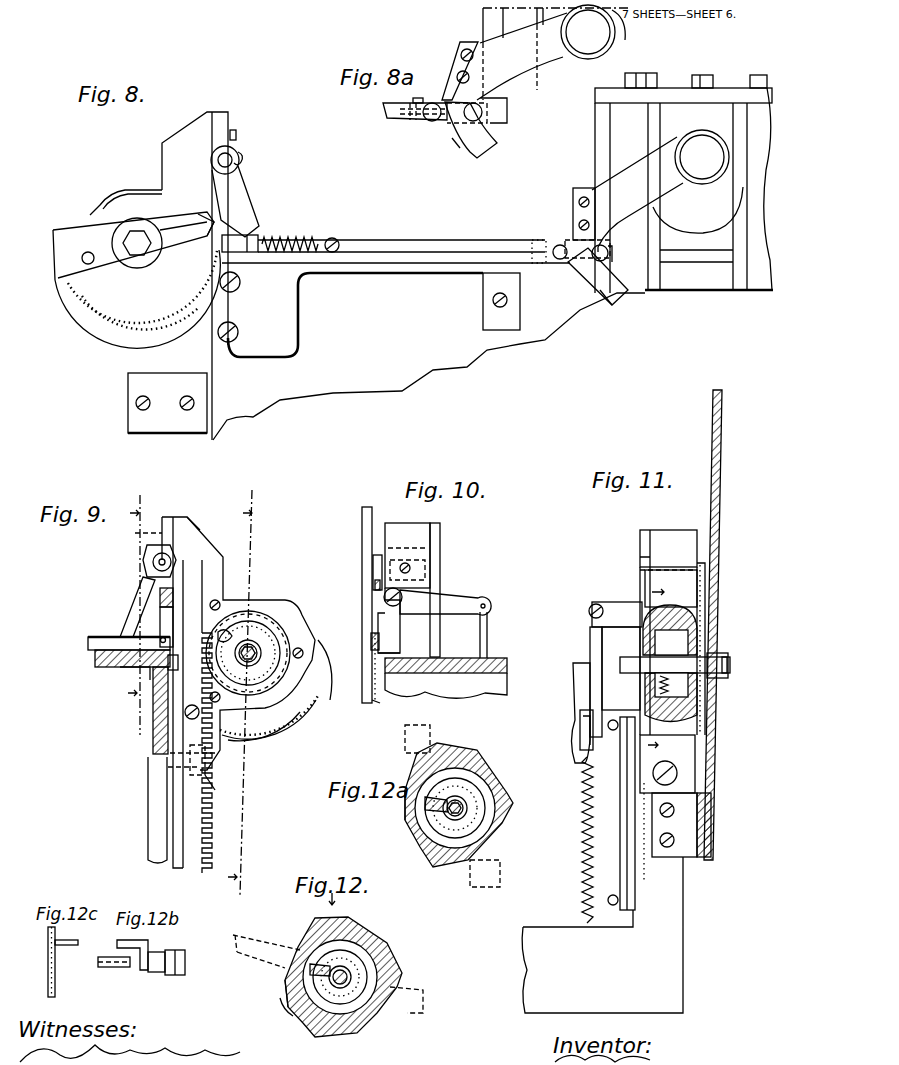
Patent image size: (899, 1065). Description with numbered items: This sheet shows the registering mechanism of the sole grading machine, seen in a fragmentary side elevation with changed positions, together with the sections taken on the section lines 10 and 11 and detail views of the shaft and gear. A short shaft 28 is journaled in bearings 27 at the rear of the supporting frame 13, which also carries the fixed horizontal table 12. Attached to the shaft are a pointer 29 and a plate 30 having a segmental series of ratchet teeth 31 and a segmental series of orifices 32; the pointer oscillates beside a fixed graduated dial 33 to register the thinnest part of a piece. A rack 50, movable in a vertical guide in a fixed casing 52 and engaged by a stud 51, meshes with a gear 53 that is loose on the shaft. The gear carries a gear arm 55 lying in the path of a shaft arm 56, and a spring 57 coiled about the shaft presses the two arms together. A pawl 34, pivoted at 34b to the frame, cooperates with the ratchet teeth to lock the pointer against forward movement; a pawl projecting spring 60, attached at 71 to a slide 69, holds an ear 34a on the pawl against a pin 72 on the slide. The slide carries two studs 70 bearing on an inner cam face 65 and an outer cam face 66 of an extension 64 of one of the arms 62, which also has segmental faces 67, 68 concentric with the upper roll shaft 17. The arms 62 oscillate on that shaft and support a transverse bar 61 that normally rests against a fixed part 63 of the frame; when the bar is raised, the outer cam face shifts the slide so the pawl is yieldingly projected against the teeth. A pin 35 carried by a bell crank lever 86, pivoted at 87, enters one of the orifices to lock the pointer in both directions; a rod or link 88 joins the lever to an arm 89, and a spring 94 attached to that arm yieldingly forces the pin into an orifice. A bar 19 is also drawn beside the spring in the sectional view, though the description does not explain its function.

In FIG. 9, the section line 10 is at (146, 609).
In FIG. 9, the section line 11 is at (247, 691).
In FIG. 11, the fixed horizontal table 12 is at (671, 662).
In FIG. 8, the supporting frame 13 is at (429, 356).
In FIG. 8, the shaft of upper roll 17 is at (702, 157).
In FIG. 8A, the shaft of upper roll 17 is at (588, 32).
In FIG. 11, the slide bar 19 is at (622, 806).
In FIG. 11, the bearings 27 is at (640, 662).
In FIG. 8, the short shaft 28 is at (140, 268).
In FIG. 9, the short shaft 28 is at (262, 614).
In FIG. 11, the short shaft 28 is at (621, 668).
In FIG. 12A, the short shaft 28 is at (463, 812).
In FIG. 12, the short shaft 28 is at (347, 1035).
In FIG. 12B, the short shaft 28 is at (116, 968).
In FIG. 8, the pointer 29 is at (186, 242).
In FIG. 11, the pointer 29 is at (727, 660).
In FIG. 12A, the pointer 29 is at (432, 730).
In FIG. 12, the pointer 29 is at (315, 963).
In FIG. 8, the plate 30 is at (136, 283).
In FIG. 9, the plate 30 is at (220, 783).
In FIG. 8, the ratchet teeth 31 is at (185, 373).
In FIG. 9, the ratchet teeth 31 is at (258, 746).
In FIG. 8, the orifices 32 is at (120, 327).
In FIG. 9, the orifices 32 is at (280, 722).
In FIG. 10, the orifices 32 is at (370, 640).
In FIG. 9, the graduated dial 33 is at (327, 684).
In FIG. 10, the graduated dial 33 is at (362, 530).
In FIG. 11, the graduated dial 33 is at (722, 520).
In FIG. 8, the pawl 34 is at (245, 212).
In FIG. 9, the pawl 34 is at (145, 572).
In FIG. 10, the pawl 34 is at (373, 572).
In FIG. 8, the ear 34a is at (250, 253).
In FIG. 9, the ear 34a is at (122, 634).
In FIG. 8, the pawl pivot 34b is at (265, 160).
In FIG. 9, the pawl pivot 34b is at (192, 522).
In FIG. 8, the pin 35 is at (205, 224).
In FIG. 9, the pin 35 is at (150, 668).
In FIG. 10, the pin 35 is at (392, 650).
In FIG. 9, the rack 50 is at (180, 707).
In FIG. 11, the rack 50 is at (712, 750).
In FIG. 9, the stud 51 is at (185, 714).
In FIG. 10, the stud 51 is at (376, 705).
In FIG. 8, the fixed casing 52 is at (160, 150).
In FIG. 9, the fixed casing 52 is at (240, 588).
In FIG. 10, the fixed casing 52 is at (420, 536).
In FIG. 11, the fixed casing 52 is at (680, 560).
In FIG. 11, the gear 53 is at (589, 612).
In FIG. 12C, the gear 53 is at (56, 980).
In FIG. 9, the gear arm 55 is at (184, 664).
In FIG. 12A, the gear arm 55 is at (405, 810).
In FIG. 12, the gear arm 55 is at (288, 995).
In FIG. 12C, the gear arm 55 is at (66, 946).
In FIG. 9, the shaft arm 56 is at (242, 630).
In FIG. 11, the shaft arm 56 is at (698, 630).
In FIG. 12A, the shaft arm 56 is at (425, 800).
In FIG. 12, the shaft arm 56 is at (308, 965).
In FIG. 12B, the shaft arm 56 is at (150, 942).
In FIG. 11, the spring 57 is at (671, 697).
In FIG. 12A, the spring 57 is at (470, 790).
In FIG. 12, the spring 57 is at (372, 952).
In FIG. 8, the pawl projecting spring 60 is at (300, 238).
In FIG. 8, the transverse bar 61 is at (573, 190).
In FIG. 8A, the transverse bar 61 is at (458, 43).
In FIG. 8, the arms 62 is at (667, 194).
In FIG. 8A, the arms 62 is at (551, 66).
In FIG. 8, the fixed part of frame 63 is at (597, 138).
In FIG. 8A, the fixed part of frame 63 is at (488, 32).
In FIG. 8, the extension 64 is at (592, 288).
In FIG. 8A, the extension 64 is at (465, 148).
In FIG. 8, the inner cam face 65 is at (579, 222).
In FIG. 8A, the inner cam face 65 is at (500, 118).
In FIG. 8, the outer cam face 66 is at (532, 244).
In FIG. 8, the segmental face 67 is at (610, 268).
In FIG. 8A, the segmental face 67 is at (495, 142).
In FIG. 8, the segmental face 68 is at (599, 302).
In FIG. 8A, the segmental face 68 is at (447, 137).
In FIG. 8, the slide 69 is at (432, 243).
In FIG. 8A, the slide 69 is at (393, 113).
In FIG. 9, the slide 69 is at (88, 645).
In FIG. 8, the studs 70 is at (607, 249).
In FIG. 8A, the studs 70 is at (428, 119).
In FIG. 8, the spring attachment point 71 is at (336, 240).
In FIG. 8, the pin 72 is at (232, 293).
In FIG. 9, the bell crank lever 86 is at (168, 624).
In FIG. 10, the bell crank lever 86 is at (440, 599).
In FIG. 11, the bell crank lever 86 is at (615, 604).
In FIG. 10, the pivot 87 is at (384, 597).
In FIG. 10, the rod or link 88 is at (488, 652).
In FIG. 11, the rod or link 88 is at (573, 703).
In FIG. 11, the arm 89 is at (583, 742).
In FIG. 11, the spring 94 is at (583, 860).